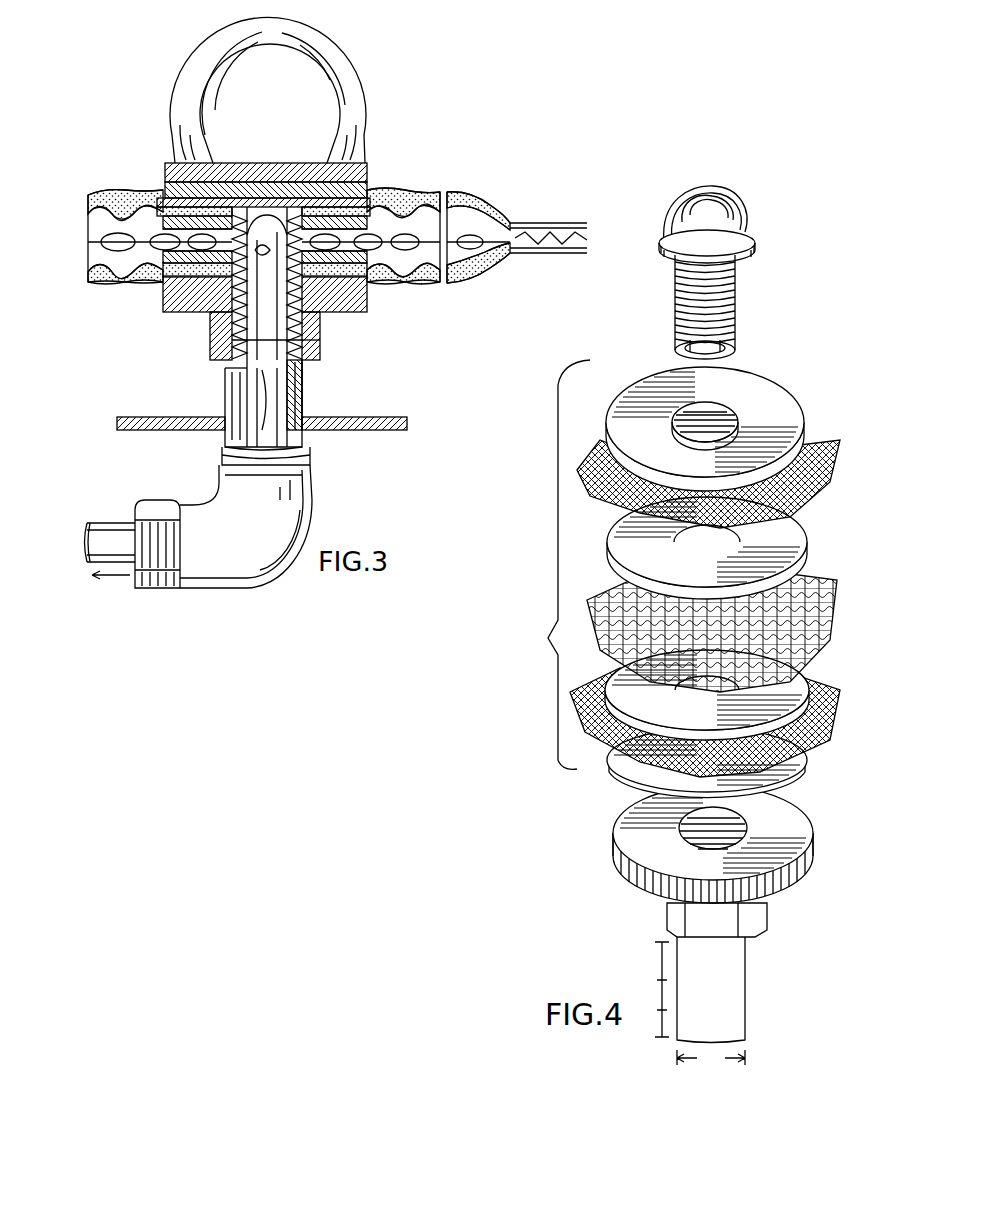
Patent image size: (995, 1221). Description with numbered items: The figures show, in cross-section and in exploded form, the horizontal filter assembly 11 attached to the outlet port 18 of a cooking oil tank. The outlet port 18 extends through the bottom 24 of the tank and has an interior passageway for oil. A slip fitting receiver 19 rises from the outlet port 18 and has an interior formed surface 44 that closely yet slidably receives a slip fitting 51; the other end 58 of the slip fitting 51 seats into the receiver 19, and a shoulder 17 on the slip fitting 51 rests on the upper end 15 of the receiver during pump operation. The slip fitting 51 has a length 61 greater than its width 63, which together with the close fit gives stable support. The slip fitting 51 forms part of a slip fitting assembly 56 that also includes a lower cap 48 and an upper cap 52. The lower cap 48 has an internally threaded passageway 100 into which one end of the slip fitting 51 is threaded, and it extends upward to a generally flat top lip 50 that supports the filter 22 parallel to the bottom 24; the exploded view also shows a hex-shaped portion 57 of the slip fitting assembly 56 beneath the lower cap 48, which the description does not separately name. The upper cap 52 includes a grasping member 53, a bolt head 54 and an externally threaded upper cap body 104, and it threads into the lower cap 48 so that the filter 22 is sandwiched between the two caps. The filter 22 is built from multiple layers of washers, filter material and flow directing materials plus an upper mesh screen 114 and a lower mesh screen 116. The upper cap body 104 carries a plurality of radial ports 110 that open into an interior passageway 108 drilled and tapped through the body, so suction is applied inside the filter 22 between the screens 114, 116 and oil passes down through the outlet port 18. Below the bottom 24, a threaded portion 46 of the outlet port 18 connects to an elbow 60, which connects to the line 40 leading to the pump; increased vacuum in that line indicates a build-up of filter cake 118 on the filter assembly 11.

In FIG. 3, the filter assembly 11 is at (413, 142).
In FIG. 3, the upper end 15 is at (230, 368).
In FIG. 3, the shoulder 17 is at (302, 368).
In FIG. 3, the outlet port 18 is at (303, 410).
In FIG. 3, the slip fitting receiver 19 is at (303, 380).
In FIG. 3, the filter 22 is at (520, 222).
In FIG. 4, the filter 22 is at (553, 564).
In FIG. 3, the bottom 24 is at (352, 430).
In FIG. 3, the line 40 is at (118, 505).
In FIG. 3, the interior formed surface 44 is at (286, 390).
In FIG. 3, the threaded portion 46 is at (310, 458).
In FIG. 3, the lower cap 48 is at (330, 312).
In FIG. 4, the lower cap 48 is at (620, 820).
In FIG. 3, the top lip 50 is at (360, 312).
In FIG. 4, the top lip 50 is at (618, 868).
In FIG. 3, the slip fitting 51 is at (303, 348).
In FIG. 4, the slip fitting 51 is at (670, 1000).
In FIG. 3, the upper cap 52 is at (366, 175).
In FIG. 4, the upper cap 52 is at (662, 247).
In FIG. 3, the grasping member 53 is at (356, 109).
In FIG. 4, the grasping member 53 is at (668, 203).
In FIG. 3, the bolt head 54 is at (376, 190).
In FIG. 4, the bolt head 54 is at (752, 252).
In FIG. 4, the slip fitting assembly 56 is at (758, 212).
In FIG. 4, the hex nut portion 57 is at (770, 938).
In FIG. 4, the other end 58 is at (746, 1025).
In FIG. 3, the elbow 60 is at (308, 515).
In FIG. 4, the length 61 is at (657, 989).
In FIG. 4, the width 63 is at (711, 1059).
In FIG. 4, the internally threaded passageway 100 is at (680, 828).
In FIG. 3, the upper cap body 104 is at (232, 322).
In FIG. 4, the upper cap body 104 is at (676, 302).
In FIG. 3, the interior passageway 108 is at (247, 341).
In FIG. 3, the radial ports 110 is at (294, 210).
In FIG. 4, the radial ports 110 is at (736, 290).
In FIG. 3, the upper mesh screen 114 is at (487, 212).
In FIG. 4, the upper mesh screen 114 is at (593, 468).
In FIG. 3, the lower mesh screen 116 is at (490, 283).
In FIG. 4, the lower mesh screen 116 is at (592, 724).
In FIG. 3, the filter cake 118 is at (455, 280).
In FIG. 4, the filter cake 118 is at (712, 618).